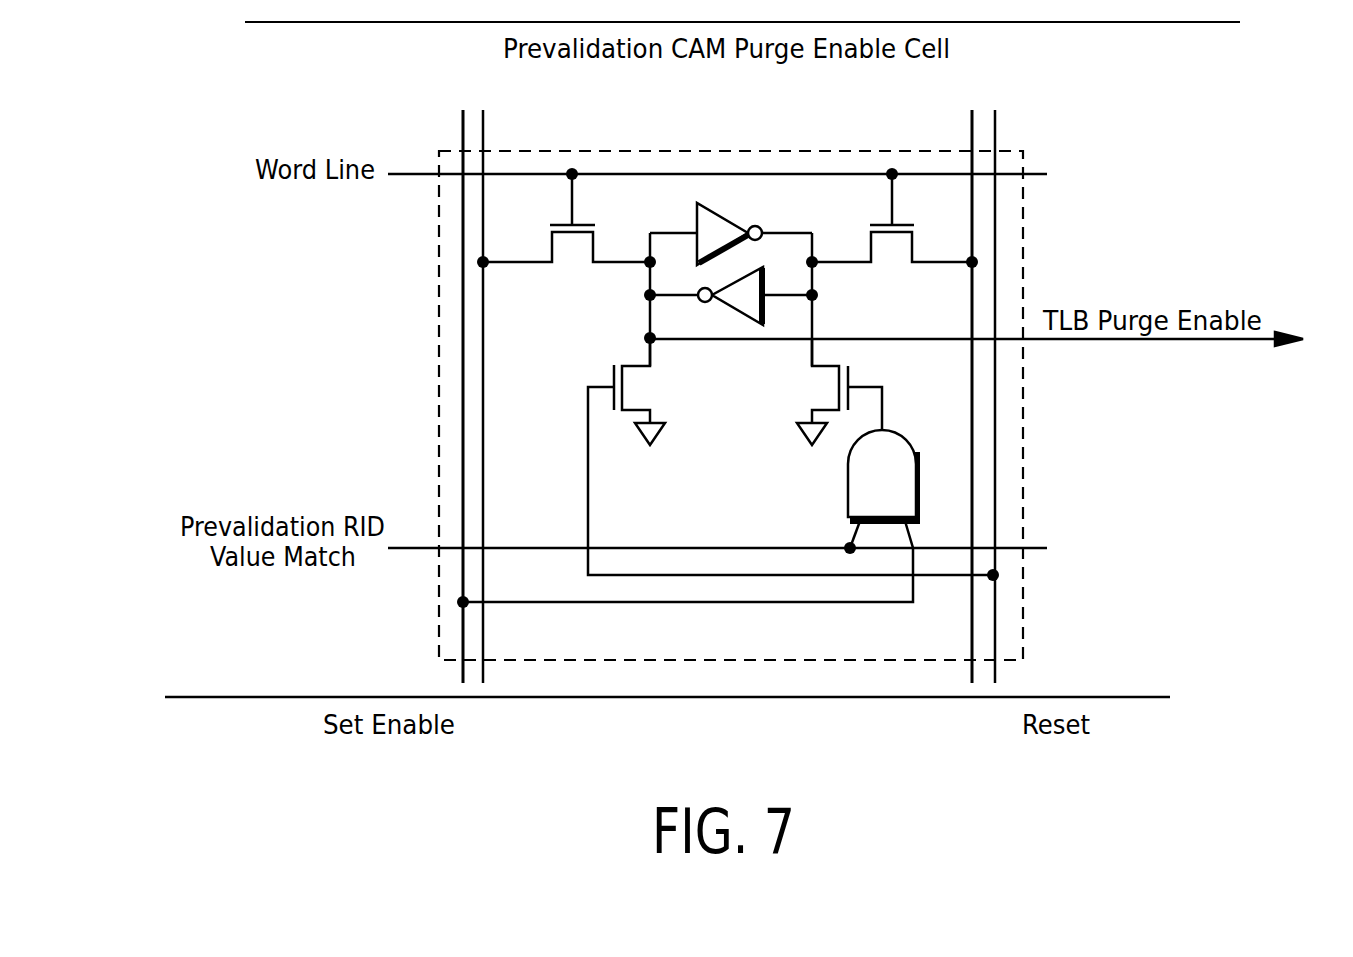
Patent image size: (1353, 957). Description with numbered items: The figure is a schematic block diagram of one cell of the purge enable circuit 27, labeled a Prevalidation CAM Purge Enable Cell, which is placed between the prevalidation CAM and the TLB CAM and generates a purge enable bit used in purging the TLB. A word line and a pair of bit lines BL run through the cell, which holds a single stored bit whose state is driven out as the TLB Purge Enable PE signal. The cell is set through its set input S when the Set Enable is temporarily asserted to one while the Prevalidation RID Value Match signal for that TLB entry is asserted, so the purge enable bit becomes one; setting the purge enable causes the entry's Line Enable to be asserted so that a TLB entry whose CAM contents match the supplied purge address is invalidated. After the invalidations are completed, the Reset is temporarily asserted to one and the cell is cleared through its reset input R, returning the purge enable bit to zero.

The purge enable circuit 27 is at (770, 652).
The bit line BL is at (504, 396).
The purge enable PE is at (998, 341).
The reset transistor R is at (778, 456).
The set transistor S is at (853, 391).